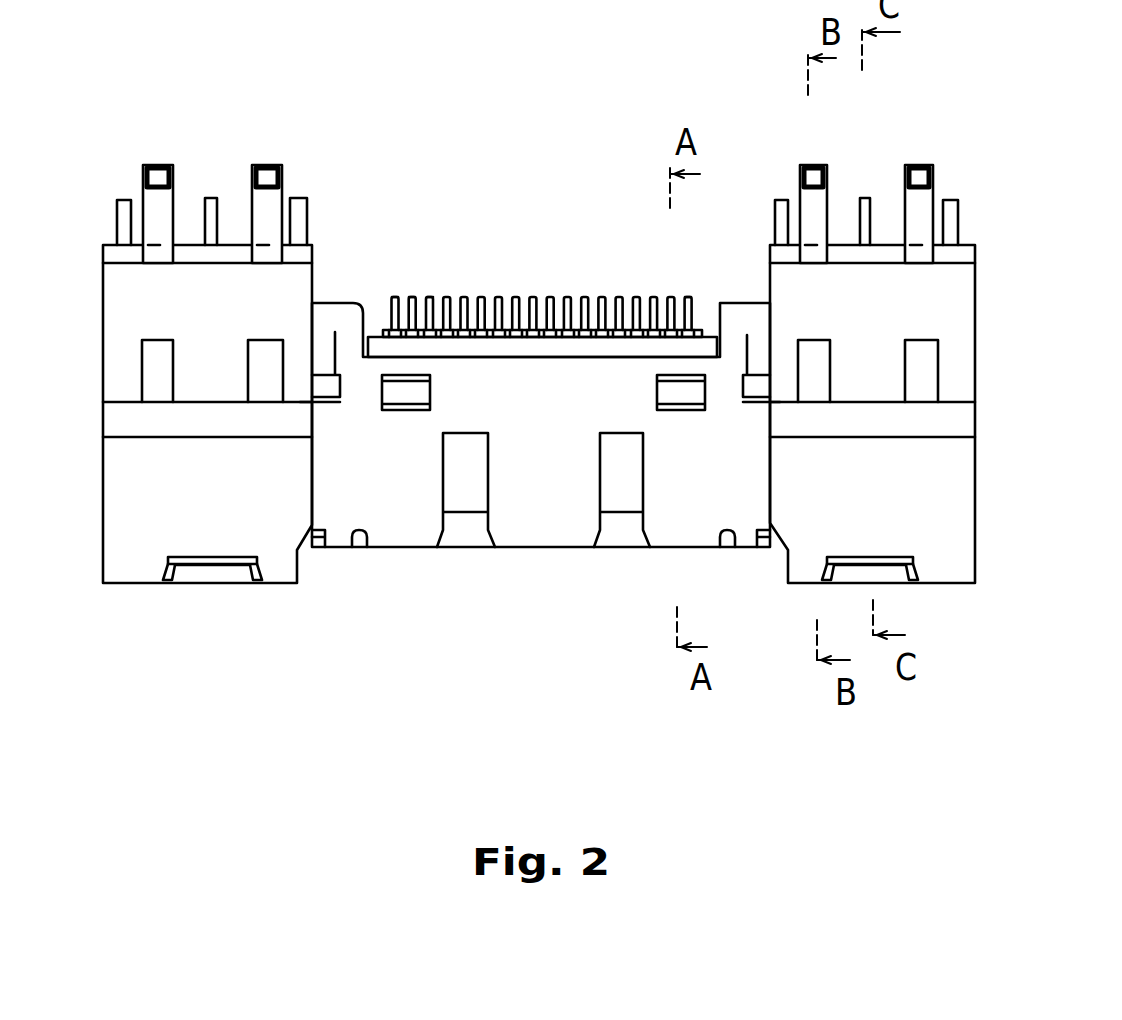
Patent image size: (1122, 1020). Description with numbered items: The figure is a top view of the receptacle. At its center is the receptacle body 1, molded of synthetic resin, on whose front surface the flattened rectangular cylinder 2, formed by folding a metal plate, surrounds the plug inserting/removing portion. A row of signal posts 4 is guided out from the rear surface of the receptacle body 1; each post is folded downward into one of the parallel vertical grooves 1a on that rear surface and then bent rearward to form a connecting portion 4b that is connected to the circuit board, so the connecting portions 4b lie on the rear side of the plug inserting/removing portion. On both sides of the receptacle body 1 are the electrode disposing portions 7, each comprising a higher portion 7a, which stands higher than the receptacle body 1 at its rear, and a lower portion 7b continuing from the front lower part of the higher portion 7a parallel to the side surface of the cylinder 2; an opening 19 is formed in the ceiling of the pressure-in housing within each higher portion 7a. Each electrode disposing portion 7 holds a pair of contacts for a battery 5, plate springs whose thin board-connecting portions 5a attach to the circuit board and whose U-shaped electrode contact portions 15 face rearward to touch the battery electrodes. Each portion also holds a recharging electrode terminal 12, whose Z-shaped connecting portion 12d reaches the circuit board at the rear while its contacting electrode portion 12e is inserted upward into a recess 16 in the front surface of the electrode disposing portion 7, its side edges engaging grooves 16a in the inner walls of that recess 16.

The receptacle body 1 is at (488, 348).
The vertical grooves 1a is at (473, 327).
The flattened rectangular cylinder 2 is at (422, 518).
The signal post 4 is at (392, 317).
The connecting portion 4b is at (393, 313).
The contact for a battery 5 is at (268, 232).
The board-connecting portion 5a is at (120, 213).
The electrode disposing portion 7 is at (132, 463).
The higher portion 7a is at (130, 317).
The lower portion 7b is at (130, 505).
The recharging electrode terminal 12 is at (265, 93).
The connecting portion 12d is at (212, 223).
The contacting electrode portion 12e is at (217, 562).
The electrode contact portion 15 is at (157, 170).
The recess 16 is at (193, 573).
The grooves 16a is at (167, 578).
The opening 19 is at (253, 370).